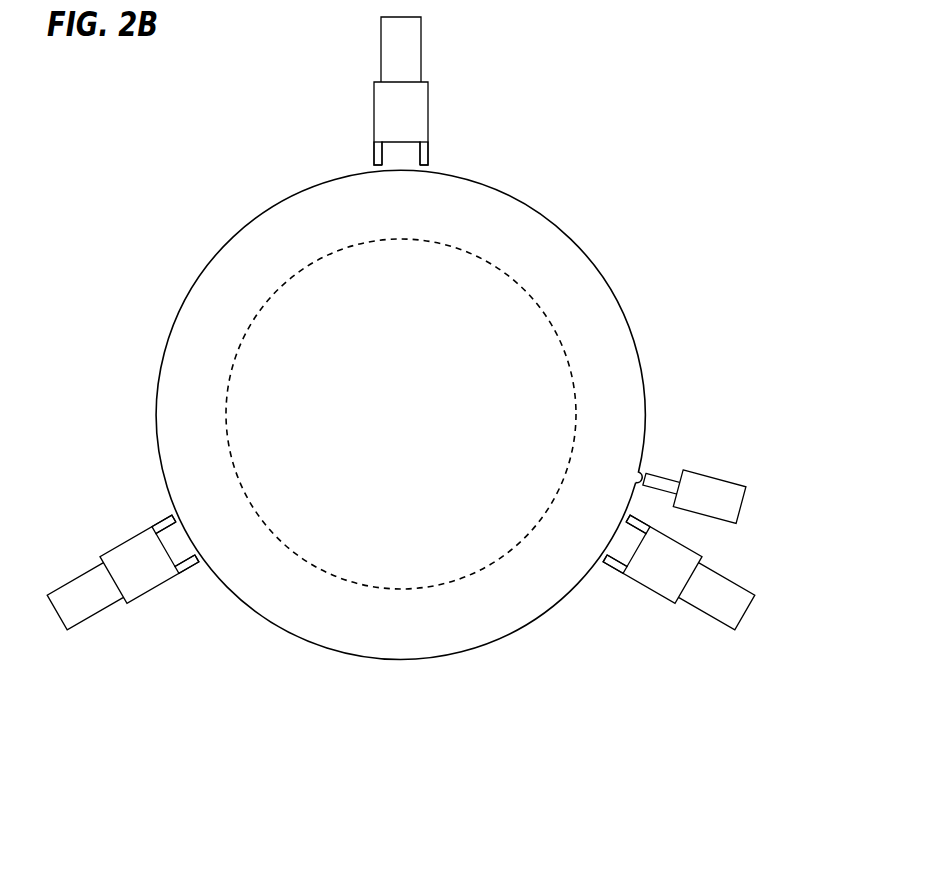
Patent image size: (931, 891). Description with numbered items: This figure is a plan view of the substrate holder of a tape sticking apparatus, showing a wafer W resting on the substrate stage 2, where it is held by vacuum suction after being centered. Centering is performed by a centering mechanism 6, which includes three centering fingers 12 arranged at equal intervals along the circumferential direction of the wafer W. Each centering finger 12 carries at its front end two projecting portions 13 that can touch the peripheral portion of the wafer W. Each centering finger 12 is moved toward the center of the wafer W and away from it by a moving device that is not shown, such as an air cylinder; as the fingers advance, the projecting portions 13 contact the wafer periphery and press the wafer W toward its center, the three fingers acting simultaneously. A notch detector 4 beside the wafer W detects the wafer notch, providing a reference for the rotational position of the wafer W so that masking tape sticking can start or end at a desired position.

The wafer W is at (593, 262).
The substrate stage 2 is at (568, 367).
The notch detector 4 is at (719, 480).
The centering mechanism 6 is at (401, 434).
The centering finger 12 is at (428, 113).
The projecting portion 13 is at (374, 160).